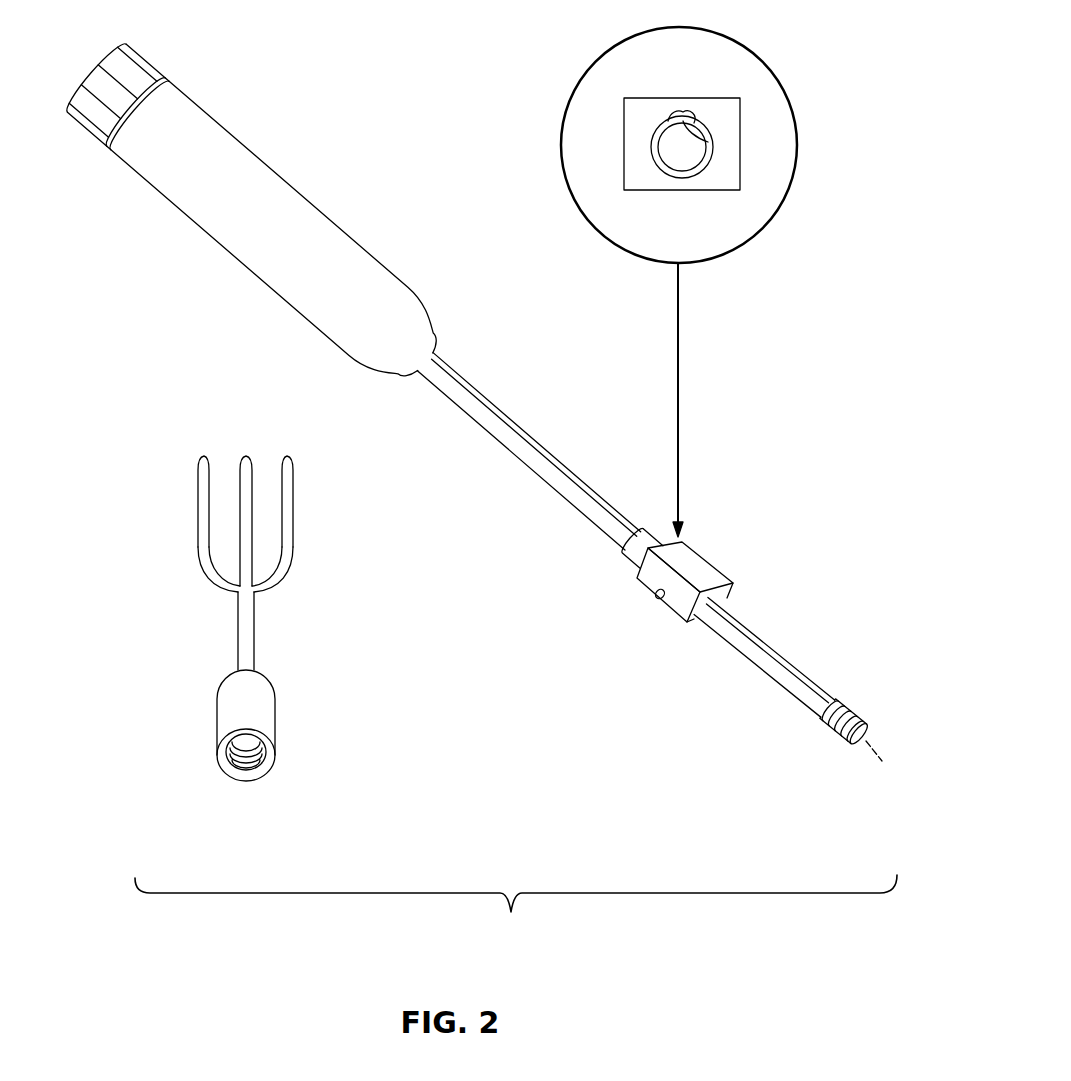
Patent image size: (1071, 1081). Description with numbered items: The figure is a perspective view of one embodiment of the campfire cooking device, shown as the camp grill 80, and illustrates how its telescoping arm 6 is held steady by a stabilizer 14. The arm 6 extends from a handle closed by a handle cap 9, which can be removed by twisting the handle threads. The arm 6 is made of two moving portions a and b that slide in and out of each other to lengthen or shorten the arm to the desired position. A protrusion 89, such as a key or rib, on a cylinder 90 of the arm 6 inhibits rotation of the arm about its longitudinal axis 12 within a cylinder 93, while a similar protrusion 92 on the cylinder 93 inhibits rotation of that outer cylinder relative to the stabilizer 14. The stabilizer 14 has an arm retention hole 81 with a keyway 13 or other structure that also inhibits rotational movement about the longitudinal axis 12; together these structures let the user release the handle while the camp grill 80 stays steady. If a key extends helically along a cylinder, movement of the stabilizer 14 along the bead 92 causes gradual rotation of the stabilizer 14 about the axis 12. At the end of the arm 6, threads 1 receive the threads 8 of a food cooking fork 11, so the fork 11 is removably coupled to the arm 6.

The handle cap 9 is at (150, 53).
The cylinder 90 is at (478, 410).
The protrusion 89 is at (552, 450).
The moving portion a is at (513, 458).
The telescoping arm 6 is at (763, 680).
The stabilizer 14 is at (703, 562).
The keyway 13 is at (707, 143).
The arm retention hole 81 is at (712, 163).
The protrusion (bead) 92 is at (743, 620).
The moving portion b is at (708, 625).
The cylinder 93 is at (830, 693).
The threads 1 is at (857, 722).
The longitudinal axis 12 is at (880, 760).
The food cooking fork 11 is at (232, 707).
The threads 8 is at (243, 767).
The camp grill 80 is at (516, 908).